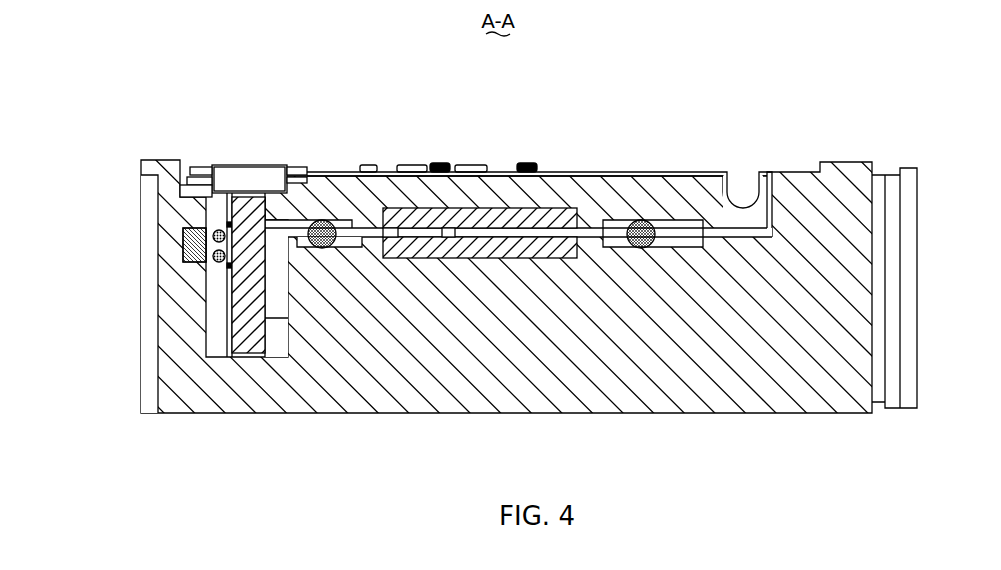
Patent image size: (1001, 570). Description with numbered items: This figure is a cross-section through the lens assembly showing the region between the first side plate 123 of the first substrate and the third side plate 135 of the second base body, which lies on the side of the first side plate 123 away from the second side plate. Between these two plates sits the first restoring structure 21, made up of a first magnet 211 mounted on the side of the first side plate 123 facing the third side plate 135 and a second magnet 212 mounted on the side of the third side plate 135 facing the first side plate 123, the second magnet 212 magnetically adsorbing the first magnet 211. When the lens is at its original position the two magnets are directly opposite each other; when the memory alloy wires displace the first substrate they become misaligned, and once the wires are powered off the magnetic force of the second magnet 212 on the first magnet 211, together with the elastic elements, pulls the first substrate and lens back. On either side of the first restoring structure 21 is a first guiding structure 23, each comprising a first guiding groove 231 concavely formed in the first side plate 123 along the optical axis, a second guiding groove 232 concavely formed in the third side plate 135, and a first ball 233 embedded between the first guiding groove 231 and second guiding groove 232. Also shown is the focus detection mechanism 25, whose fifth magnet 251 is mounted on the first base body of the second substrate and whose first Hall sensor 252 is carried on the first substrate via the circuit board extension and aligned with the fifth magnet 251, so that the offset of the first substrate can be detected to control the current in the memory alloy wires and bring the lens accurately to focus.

The first side plate 123 is at (357, 200).
The third side plate 135 is at (368, 383).
The first restoring structure 21 is at (480, 173).
The first magnet 211 is at (510, 217).
The second magnet 212 is at (446, 247).
The first guiding structure 23 is at (518, 217).
The first guiding groove 231 is at (610, 220).
The second guiding groove 232 is at (687, 243).
The first ball 233 is at (641, 225).
The focus detection mechanism 25 is at (124, 263).
The fifth magnet 251 is at (185, 234).
The first Hall sensor 252 is at (220, 260).